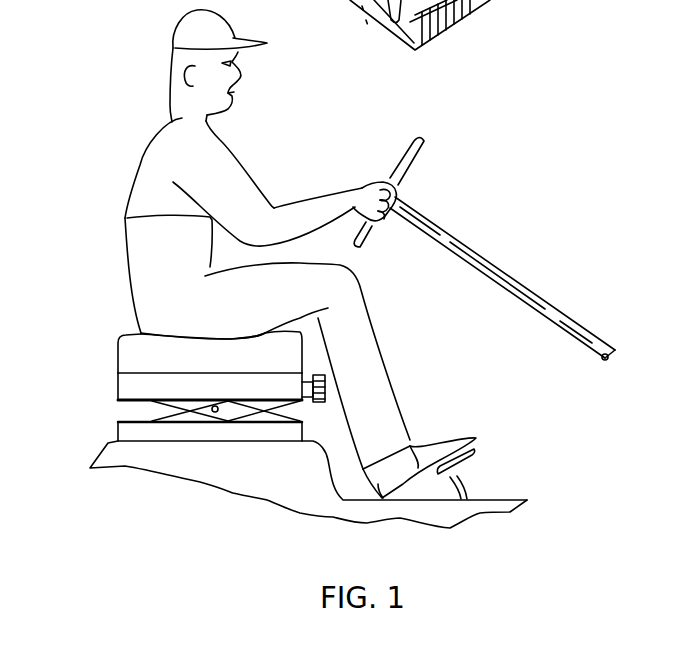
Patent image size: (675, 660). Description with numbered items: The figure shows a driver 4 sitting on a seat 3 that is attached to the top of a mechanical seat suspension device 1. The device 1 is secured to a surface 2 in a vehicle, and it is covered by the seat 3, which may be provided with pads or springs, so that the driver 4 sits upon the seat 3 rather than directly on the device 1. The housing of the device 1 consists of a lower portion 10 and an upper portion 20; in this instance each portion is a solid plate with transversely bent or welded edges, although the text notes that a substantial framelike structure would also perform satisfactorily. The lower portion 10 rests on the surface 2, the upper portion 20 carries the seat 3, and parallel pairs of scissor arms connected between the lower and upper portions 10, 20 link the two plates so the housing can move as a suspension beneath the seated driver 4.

The mechanical seat suspension device 1 is at (100, 405).
The surface 2 is at (203, 442).
The seat 3 is at (115, 347).
The driver 4 is at (130, 267).
The lower portion 10 is at (118, 430).
The upper portion 20 is at (118, 384).